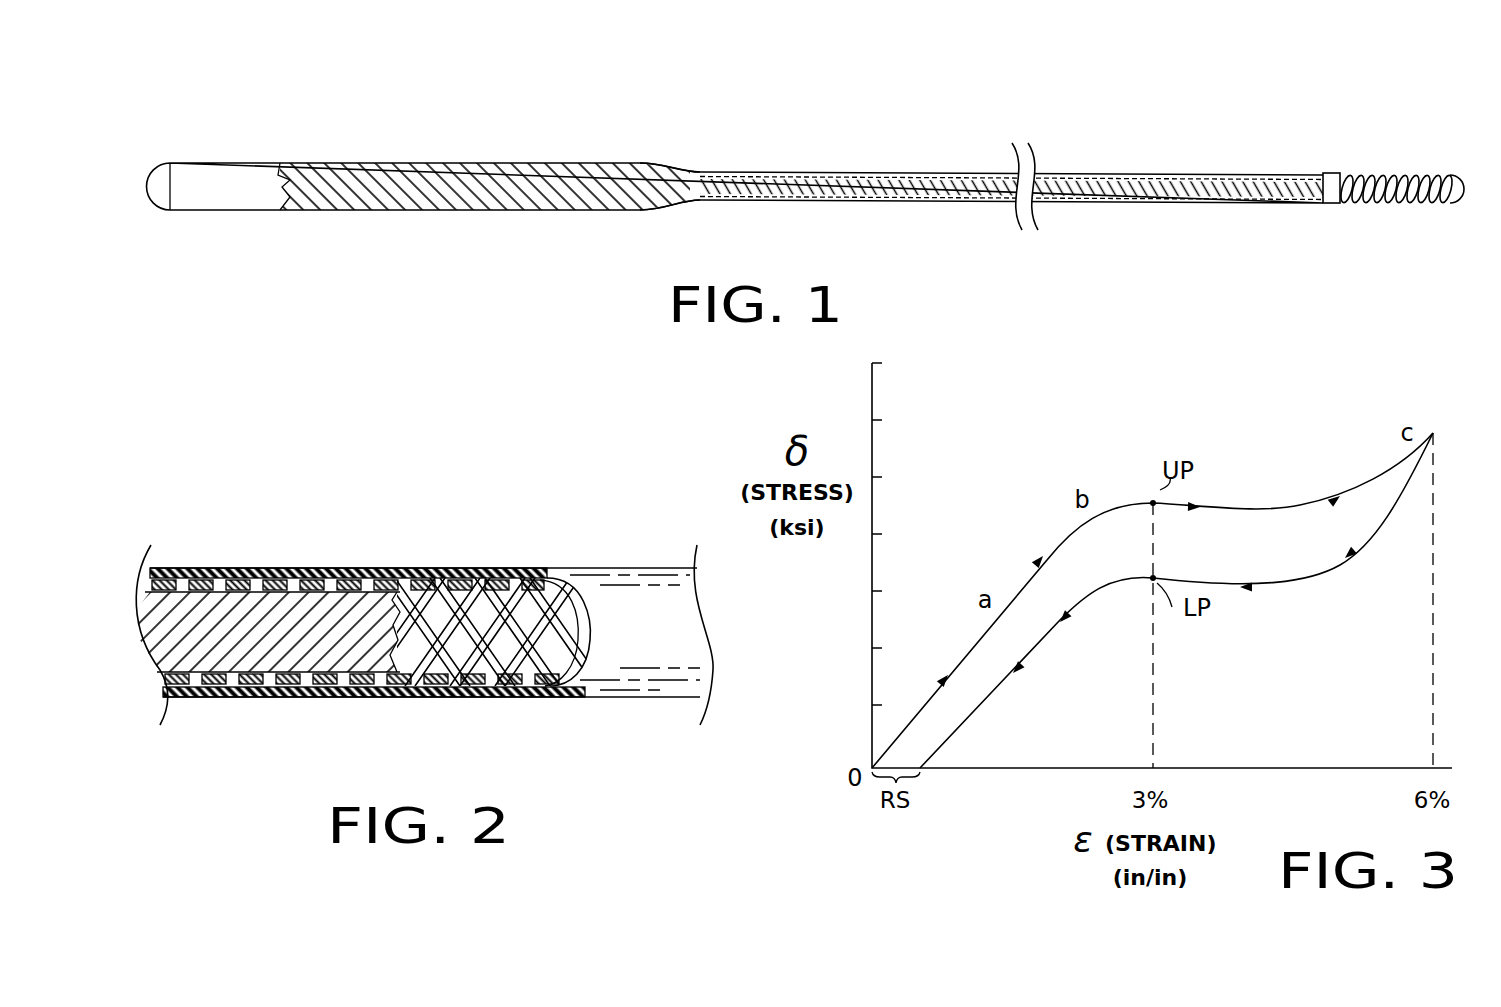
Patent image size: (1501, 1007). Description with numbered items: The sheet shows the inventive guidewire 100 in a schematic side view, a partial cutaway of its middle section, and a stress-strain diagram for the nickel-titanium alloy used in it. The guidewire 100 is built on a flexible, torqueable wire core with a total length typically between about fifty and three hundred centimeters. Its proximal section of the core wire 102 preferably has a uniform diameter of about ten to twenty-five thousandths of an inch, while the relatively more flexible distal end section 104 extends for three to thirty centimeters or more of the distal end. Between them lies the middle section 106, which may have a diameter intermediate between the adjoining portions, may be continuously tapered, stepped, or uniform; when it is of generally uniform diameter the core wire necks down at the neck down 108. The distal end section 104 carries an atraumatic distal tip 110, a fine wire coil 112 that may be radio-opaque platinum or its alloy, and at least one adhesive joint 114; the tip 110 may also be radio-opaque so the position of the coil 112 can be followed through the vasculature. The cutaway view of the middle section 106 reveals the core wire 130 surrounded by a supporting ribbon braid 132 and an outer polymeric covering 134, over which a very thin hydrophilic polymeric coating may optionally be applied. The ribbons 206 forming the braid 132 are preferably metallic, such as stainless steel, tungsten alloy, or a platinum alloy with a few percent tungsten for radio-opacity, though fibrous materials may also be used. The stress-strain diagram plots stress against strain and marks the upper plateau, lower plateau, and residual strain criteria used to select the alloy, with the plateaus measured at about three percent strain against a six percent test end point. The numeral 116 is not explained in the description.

In FIG. 1, the guidewire 100 is at (457, 126).
In FIG. 1, the proximal section of the core wire 102 is at (661, 229).
In FIG. 1, the distal end section 104 is at (1403, 190).
In FIG. 1, the middle section 106 is at (1000, 150).
In FIG. 2, the middle section 106 is at (424, 610).
In FIG. 1, the neck down 108 is at (666, 165).
In FIG. 1, the atraumatic distal tip 110 is at (1458, 146).
In FIG. 1, the fine wire coil 112 is at (1365, 205).
In FIG. 1, the adhesive joint 114 is at (1454, 190).
In FIG. 1, the shaft wall 116 is at (945, 205).
In FIG. 2, the core wire 130 is at (218, 655).
In FIG. 2, the supporting ribbon braid 132 is at (312, 698).
In FIG. 2, the polymeric covering 134 is at (262, 568).
In FIG. 2, the ribbons 206 is at (520, 567).